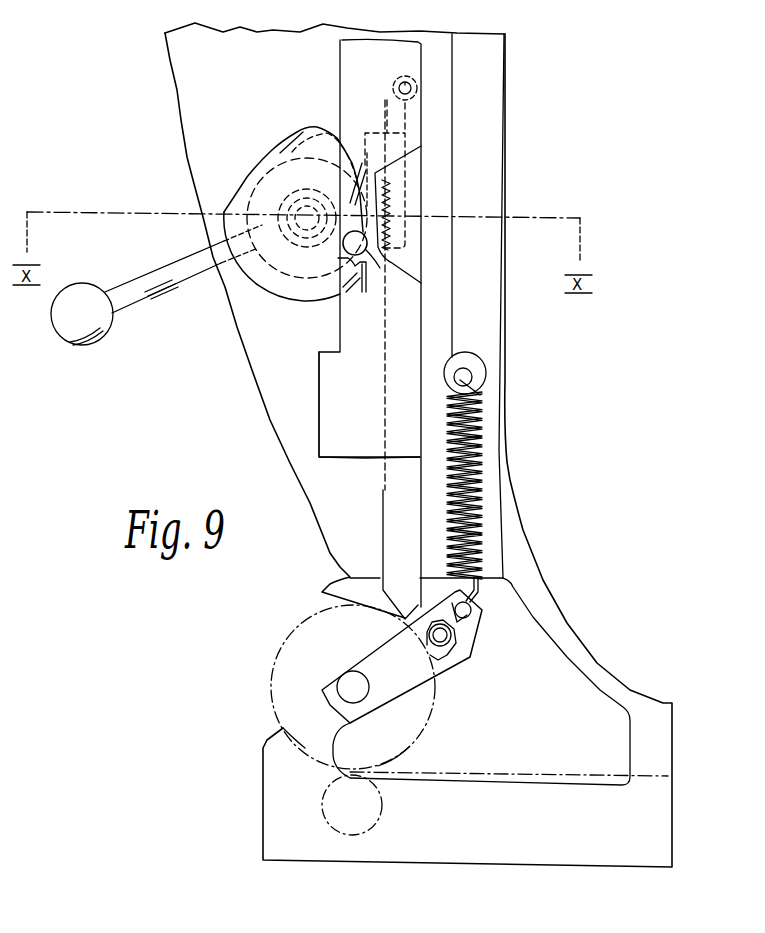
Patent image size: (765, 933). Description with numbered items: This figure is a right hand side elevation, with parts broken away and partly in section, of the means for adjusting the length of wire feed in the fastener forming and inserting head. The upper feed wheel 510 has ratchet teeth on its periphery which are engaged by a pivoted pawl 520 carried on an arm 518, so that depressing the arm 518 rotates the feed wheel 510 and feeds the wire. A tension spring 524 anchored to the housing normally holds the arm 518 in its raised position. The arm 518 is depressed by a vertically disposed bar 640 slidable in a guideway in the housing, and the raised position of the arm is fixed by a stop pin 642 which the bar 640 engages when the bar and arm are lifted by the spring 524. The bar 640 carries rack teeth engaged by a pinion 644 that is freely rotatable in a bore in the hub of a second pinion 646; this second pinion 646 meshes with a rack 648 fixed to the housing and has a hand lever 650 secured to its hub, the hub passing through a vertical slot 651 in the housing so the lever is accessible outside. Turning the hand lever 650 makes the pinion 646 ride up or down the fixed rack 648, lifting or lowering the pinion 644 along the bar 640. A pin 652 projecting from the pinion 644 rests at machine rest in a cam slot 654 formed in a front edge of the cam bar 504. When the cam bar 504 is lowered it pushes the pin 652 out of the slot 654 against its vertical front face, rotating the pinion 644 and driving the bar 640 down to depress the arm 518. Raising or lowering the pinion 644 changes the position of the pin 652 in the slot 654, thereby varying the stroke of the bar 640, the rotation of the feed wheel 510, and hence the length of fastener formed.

The upper feed wheel 510 is at (426, 724).
The arm 518 is at (472, 650).
The pawl 520 is at (447, 667).
The tension spring 524 is at (483, 425).
The cam bar 504 is at (319, 377).
The bar 640 is at (385, 531).
The stop pin 642 is at (397, 72).
The pinion 644 is at (388, 203).
The second pinion 646 is at (255, 186).
The rack 648 is at (392, 100).
The hand lever 650 is at (192, 280).
The vertical slot 651 is at (283, 143).
The pin 652 is at (357, 277).
The cam slot 654 is at (337, 250).